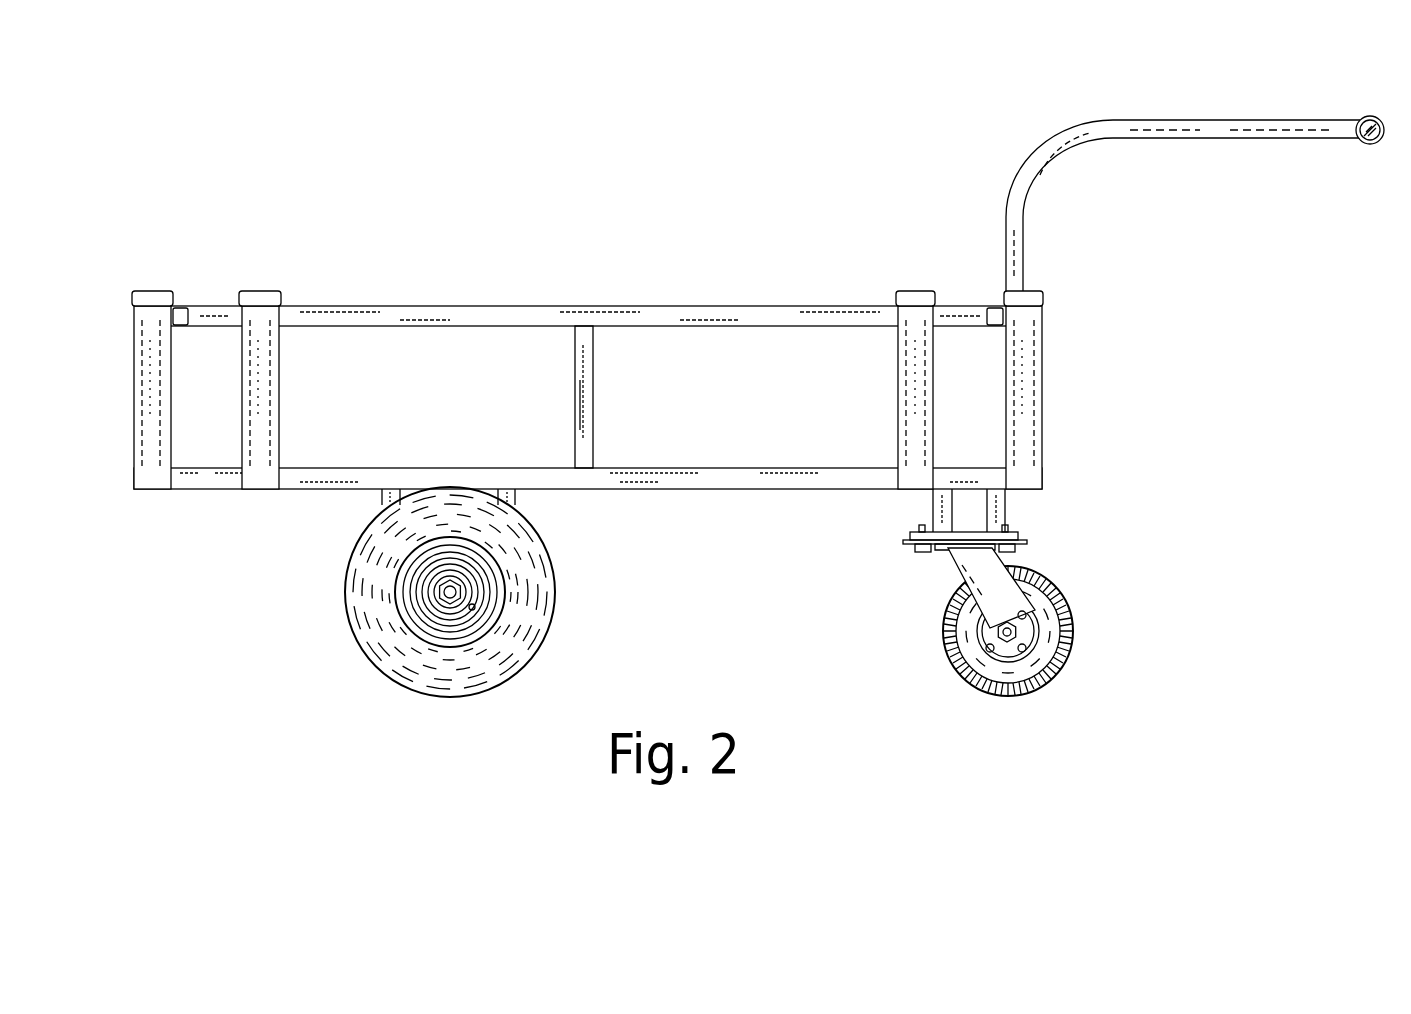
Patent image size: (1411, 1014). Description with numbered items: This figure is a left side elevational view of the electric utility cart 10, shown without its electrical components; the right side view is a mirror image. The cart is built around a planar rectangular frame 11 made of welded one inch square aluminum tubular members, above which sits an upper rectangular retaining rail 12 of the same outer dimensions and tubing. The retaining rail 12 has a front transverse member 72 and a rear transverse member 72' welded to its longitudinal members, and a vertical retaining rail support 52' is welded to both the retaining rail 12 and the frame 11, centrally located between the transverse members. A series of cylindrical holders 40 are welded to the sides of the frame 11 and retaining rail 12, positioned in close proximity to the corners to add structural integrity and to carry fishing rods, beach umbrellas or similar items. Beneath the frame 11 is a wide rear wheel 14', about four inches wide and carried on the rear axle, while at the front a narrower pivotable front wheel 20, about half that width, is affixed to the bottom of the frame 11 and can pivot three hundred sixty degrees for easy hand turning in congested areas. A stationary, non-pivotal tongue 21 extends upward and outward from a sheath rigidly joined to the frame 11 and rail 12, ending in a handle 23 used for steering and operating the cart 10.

The electric utility cart 10 is at (584, 236).
The planar rectangular frame 11 is at (306, 468).
The upper rectangular retaining rail 12 is at (430, 312).
The rear wheel 14' is at (482, 592).
The front wheel 20 is at (1062, 591).
The tongue 21 is at (1220, 124).
The handle 23 is at (1377, 118).
The cylindrical holder 40 is at (157, 398).
The vertical retaining rail support 52' is at (614, 397).
The front transverse member 72 is at (982, 292).
The rear transverse member 72' is at (194, 292).